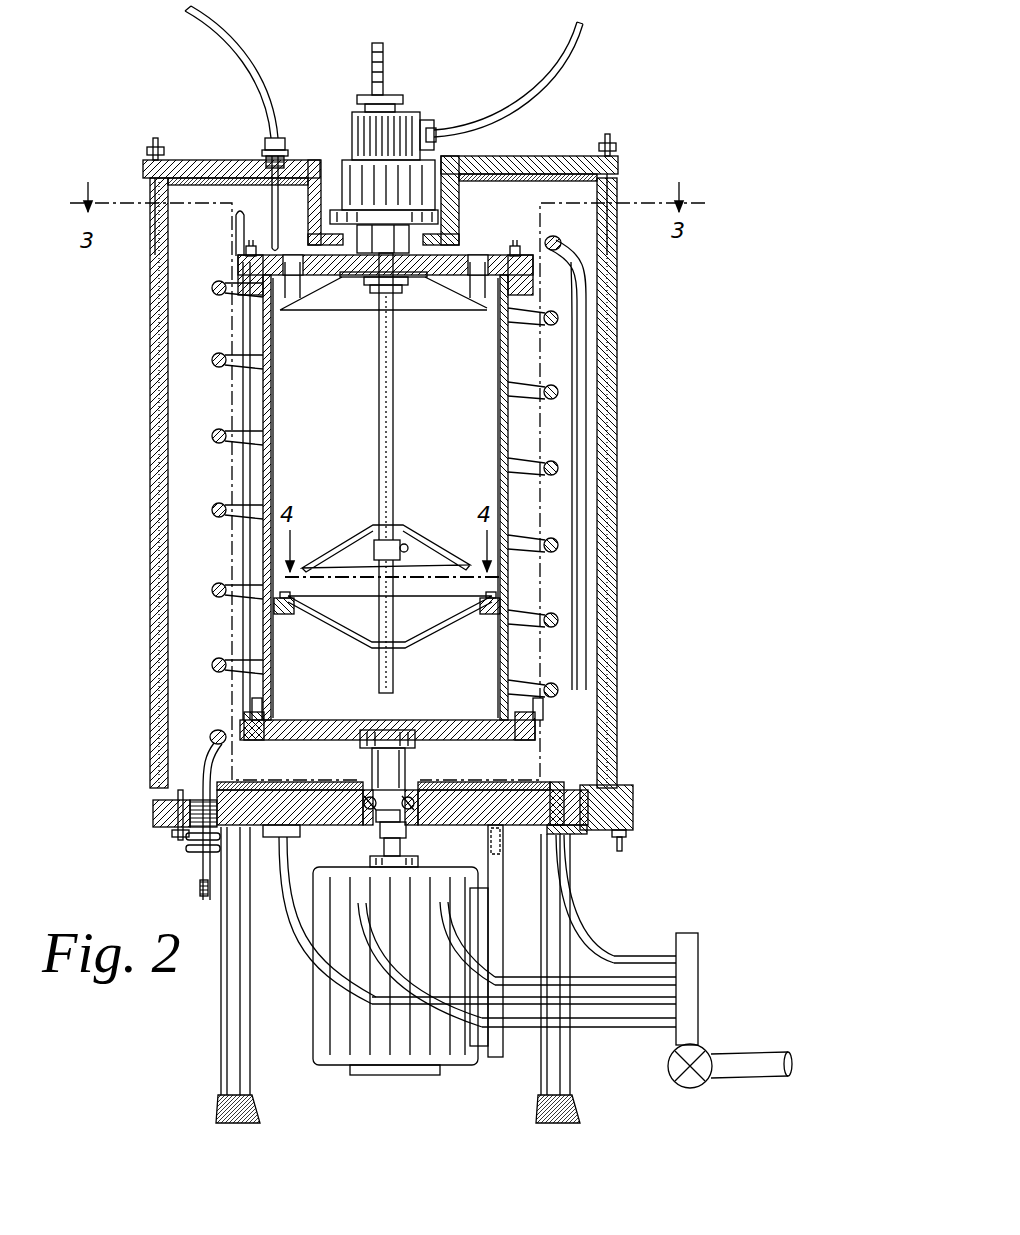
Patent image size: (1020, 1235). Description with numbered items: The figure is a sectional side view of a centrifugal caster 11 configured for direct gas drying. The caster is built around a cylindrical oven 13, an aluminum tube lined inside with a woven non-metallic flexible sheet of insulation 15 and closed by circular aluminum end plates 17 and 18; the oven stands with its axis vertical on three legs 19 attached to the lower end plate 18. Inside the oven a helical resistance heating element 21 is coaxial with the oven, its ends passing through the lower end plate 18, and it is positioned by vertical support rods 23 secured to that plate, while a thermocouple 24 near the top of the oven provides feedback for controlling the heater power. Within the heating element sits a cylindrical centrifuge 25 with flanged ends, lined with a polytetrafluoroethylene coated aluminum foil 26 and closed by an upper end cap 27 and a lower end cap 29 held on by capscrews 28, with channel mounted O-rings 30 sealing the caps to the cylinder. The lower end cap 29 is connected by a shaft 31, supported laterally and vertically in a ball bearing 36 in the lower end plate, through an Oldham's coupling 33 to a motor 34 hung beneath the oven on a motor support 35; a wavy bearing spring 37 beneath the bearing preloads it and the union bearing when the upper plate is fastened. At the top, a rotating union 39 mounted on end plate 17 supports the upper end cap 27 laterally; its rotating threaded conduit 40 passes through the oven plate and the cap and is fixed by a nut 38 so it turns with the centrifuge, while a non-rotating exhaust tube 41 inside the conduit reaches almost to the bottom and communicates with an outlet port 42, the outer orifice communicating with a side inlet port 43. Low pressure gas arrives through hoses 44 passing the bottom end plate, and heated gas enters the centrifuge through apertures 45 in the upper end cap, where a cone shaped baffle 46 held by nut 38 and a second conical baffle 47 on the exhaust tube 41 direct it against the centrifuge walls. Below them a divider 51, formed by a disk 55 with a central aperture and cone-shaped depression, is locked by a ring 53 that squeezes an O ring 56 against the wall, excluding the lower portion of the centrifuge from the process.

The centrifugal caster 11 is at (645, 440).
The cylindrical oven 13 is at (618, 288).
The flexible sheet of insulation 15 is at (160, 396).
The upper end plate 17 is at (618, 160).
The lower end plate 18 is at (636, 800).
The legs 19 is at (226, 1040).
The helical resistance heating element 21 is at (215, 445).
The vertical support rods 23 is at (250, 333).
The thermocouple 24 is at (272, 193).
The centrifuge 25 is at (508, 442).
The polytetrafluoroethylene coated aluminum foil 26 is at (500, 440).
The upper end cap 27 is at (289, 256).
The capscrews 28 is at (251, 256).
The lower end cap 29 is at (465, 740).
The O-rings 30 is at (262, 268).
The shaft 31 is at (372, 756).
The Oldham's coupling 33 is at (380, 832).
The motor 34 is at (320, 1016).
The motor support 35 is at (500, 944).
The ball bearing 36 is at (412, 792).
The wavy bearing spring 37 is at (420, 816).
The nut 38 is at (375, 285).
The rotating union 39 is at (348, 128).
The rotating threaded conduit 40 is at (398, 282).
The exhaust tube 41 is at (395, 685).
The outlet port 42 is at (392, 94).
The inlet port 43 is at (436, 128).
The hoses 44 is at (614, 955).
The apertures 45 is at (462, 254).
The cone shaped baffle 46 is at (455, 292).
The second conical baffle 47 is at (425, 535).
The divider 51 is at (358, 642).
The ring 53 is at (302, 608).
The disk 55 is at (415, 606).
The O ring 56 is at (286, 615).